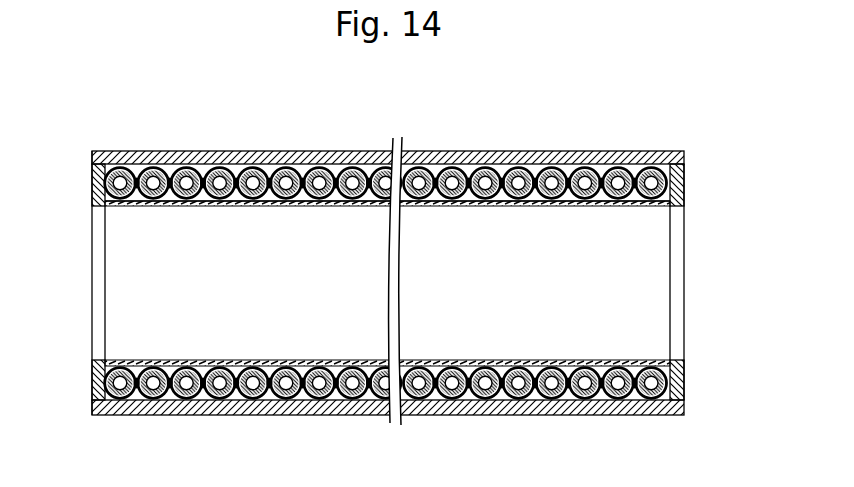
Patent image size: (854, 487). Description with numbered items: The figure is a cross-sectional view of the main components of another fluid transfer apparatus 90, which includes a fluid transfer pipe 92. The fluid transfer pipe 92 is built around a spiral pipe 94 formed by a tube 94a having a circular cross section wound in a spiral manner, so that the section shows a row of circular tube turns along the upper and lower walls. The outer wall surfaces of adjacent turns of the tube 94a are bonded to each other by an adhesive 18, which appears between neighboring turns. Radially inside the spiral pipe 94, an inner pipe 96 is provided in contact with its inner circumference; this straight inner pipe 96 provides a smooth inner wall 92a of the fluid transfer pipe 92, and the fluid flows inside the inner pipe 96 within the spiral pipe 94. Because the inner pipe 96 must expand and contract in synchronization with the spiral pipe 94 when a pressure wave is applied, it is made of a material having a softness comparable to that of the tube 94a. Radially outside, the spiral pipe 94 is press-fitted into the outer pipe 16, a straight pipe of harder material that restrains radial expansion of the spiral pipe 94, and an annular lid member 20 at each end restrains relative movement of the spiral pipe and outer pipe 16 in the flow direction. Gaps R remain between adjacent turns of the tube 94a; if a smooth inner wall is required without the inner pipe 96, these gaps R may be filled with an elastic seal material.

The fluid transfer apparatus 90 is at (687, 120).
The fluid transfer pipe 92 is at (552, 146).
The inner wall 92a is at (577, 206).
The spiral pipe 94 is at (136, 207).
The tube 94a is at (142, 152).
The inner pipe 96 is at (630, 206).
The outer pipe 16 is at (468, 150).
The adhesive 18 is at (320, 158).
The lid member 20 is at (684, 184).
The gaps R is at (141, 362).